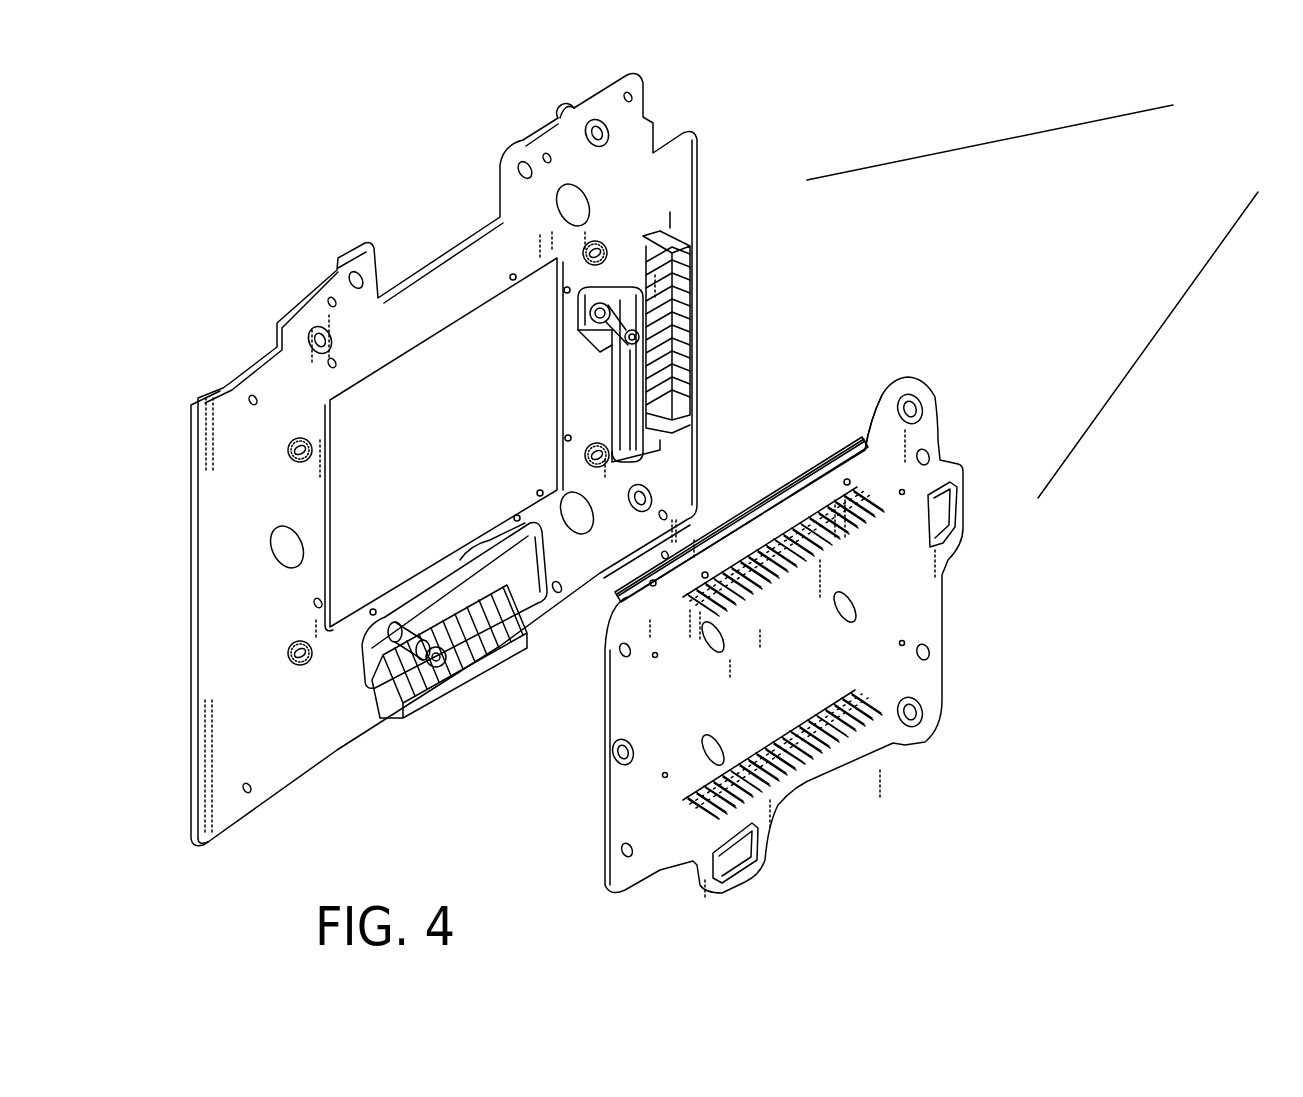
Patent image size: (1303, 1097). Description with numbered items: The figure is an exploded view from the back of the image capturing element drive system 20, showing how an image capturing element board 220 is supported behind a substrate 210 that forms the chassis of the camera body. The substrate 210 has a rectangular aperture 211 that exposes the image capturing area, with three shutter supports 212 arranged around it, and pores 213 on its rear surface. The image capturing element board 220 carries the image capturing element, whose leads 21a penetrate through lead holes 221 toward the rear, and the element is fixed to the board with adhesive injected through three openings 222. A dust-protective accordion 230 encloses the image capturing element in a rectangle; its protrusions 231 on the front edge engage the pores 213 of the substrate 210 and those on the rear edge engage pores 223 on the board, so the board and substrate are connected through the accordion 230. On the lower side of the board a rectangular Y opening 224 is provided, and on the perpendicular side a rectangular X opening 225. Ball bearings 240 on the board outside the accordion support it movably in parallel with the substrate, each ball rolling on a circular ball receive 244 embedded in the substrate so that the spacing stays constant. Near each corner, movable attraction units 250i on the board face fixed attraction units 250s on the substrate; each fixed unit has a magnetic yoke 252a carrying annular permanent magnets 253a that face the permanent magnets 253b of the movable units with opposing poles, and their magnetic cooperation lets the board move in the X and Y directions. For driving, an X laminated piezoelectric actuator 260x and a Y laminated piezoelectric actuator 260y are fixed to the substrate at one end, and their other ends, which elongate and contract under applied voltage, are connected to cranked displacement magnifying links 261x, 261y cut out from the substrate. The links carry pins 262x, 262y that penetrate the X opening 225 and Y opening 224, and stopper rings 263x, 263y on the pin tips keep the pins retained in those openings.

The image capturing element drive system 20 is at (1041, 297).
The leads 21a is at (790, 742).
The substrate 210 is at (510, 197).
The aperture 211 is at (560, 297).
The shutter supports 212 is at (566, 107).
The pores 213 is at (510, 277).
The image capturing element board 220 is at (605, 792).
The lead holes 221 is at (860, 467).
The openings 222 is at (728, 737).
The pores 223 is at (708, 570).
The Y opening 224 is at (740, 870).
The X opening 225 is at (947, 503).
The dust-protective accordion 230 is at (772, 497).
The protrusions 231 is at (812, 457).
The ball bearings 240 is at (605, 757).
The ball receive 244 is at (580, 192).
The fixed attraction units 250s is at (581, 257).
The movable attraction units 250i is at (595, 672).
The magnetic yoke 252a is at (612, 243).
The permanent magnets 253a is at (602, 240).
The permanent magnets 253b is at (603, 652).
The X laminated piezoelectric actuator 260x is at (690, 332).
The displacement magnifying link 261x is at (650, 385).
The pin 262x is at (595, 322).
The stopper ring 263x is at (625, 342).
The Y laminated piezoelectric actuator 260y is at (498, 665).
The displacement magnifying link 261y is at (430, 620).
The pin 262y is at (425, 672).
The stopper ring 263y is at (466, 682).